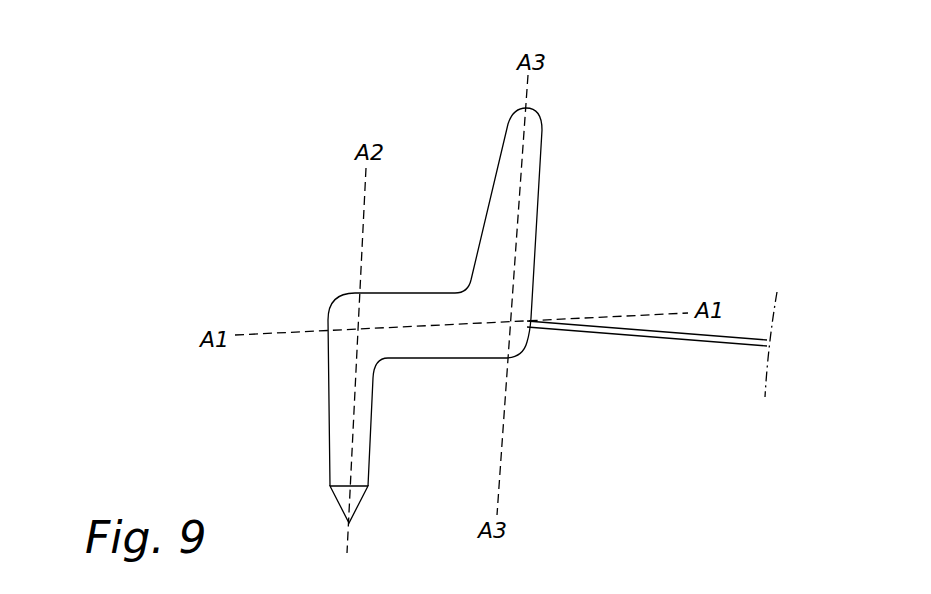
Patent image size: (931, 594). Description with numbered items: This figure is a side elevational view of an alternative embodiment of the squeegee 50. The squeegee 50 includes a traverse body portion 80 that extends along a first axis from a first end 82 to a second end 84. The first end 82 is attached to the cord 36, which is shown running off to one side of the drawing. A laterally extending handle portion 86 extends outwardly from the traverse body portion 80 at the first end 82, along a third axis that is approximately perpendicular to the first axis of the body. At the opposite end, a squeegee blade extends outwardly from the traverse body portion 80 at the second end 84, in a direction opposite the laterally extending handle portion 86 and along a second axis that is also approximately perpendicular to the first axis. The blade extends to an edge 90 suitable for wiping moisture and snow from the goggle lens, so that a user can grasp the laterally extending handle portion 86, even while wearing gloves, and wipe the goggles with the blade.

The squeegee 50 is at (278, 217).
The traverse body portion 80 is at (382, 307).
The first end 82 is at (513, 350).
The second end 84 is at (332, 313).
The laterally extending handle portion 86 is at (539, 172).
The edge 90 is at (349, 523).
The cord 36 is at (715, 343).